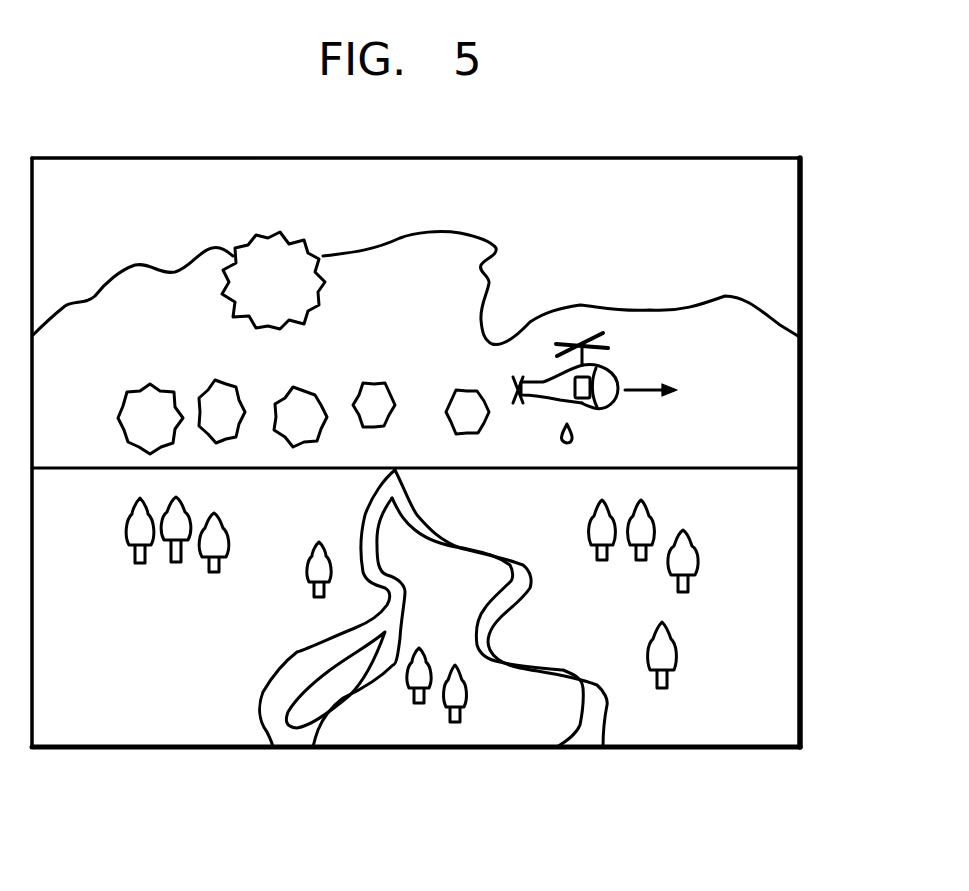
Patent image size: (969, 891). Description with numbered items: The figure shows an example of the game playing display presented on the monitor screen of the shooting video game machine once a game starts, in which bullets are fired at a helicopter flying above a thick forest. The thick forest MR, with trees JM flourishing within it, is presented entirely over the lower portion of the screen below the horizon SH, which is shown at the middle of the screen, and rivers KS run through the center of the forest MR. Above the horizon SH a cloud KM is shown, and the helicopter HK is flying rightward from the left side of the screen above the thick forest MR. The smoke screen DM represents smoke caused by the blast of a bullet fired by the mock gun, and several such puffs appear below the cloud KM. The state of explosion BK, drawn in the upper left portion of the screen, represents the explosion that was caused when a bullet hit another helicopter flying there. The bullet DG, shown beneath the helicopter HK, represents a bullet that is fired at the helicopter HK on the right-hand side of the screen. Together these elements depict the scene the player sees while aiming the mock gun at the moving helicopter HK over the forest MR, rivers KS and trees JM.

The state of explosion BK is at (278, 265).
The cloud KM is at (465, 254).
The smoke screen DM is at (295, 398).
The helicopter HK is at (612, 364).
The bullet DG is at (575, 433).
The horizon SH is at (748, 469).
The trees JM is at (218, 538).
The rivers KS is at (292, 675).
The thick forest MR is at (747, 685).